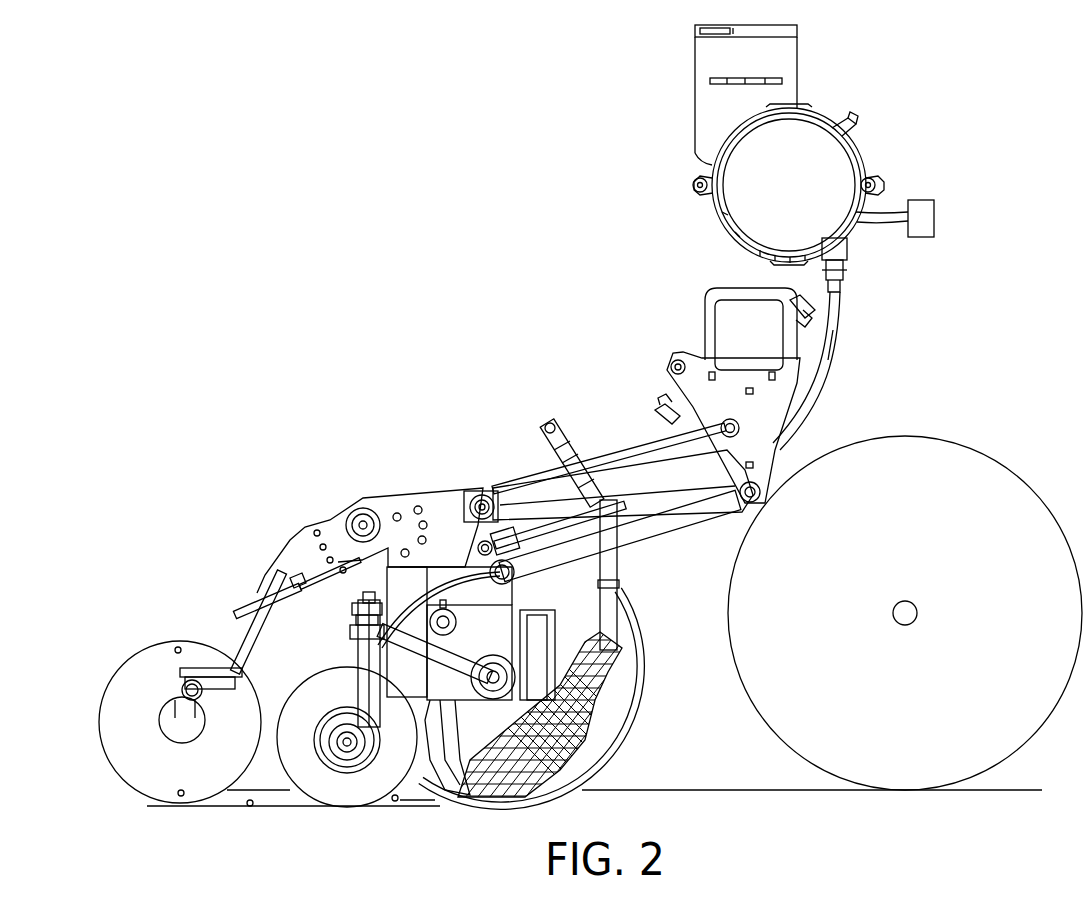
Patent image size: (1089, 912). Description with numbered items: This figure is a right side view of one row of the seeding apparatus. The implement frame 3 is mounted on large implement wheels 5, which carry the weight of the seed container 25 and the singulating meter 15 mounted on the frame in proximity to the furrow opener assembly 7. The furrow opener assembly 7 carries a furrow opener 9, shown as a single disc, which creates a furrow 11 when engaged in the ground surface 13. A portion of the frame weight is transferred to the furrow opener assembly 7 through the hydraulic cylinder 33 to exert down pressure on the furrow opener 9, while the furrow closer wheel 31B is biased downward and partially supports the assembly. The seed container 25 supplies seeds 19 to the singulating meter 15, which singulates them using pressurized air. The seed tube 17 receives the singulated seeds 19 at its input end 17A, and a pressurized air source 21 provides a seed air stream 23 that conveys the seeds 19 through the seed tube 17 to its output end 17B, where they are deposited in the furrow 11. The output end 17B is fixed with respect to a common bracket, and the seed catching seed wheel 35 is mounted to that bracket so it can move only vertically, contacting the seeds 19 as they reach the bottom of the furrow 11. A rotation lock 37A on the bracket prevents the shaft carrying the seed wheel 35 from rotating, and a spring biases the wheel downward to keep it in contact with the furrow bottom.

The implement frame 3 is at (712, 312).
The implement wheels 5 is at (972, 444).
The furrow opener assembly 7 is at (466, 490).
The furrow opener 9 is at (647, 692).
The furrow 11 is at (262, 795).
The ground surface 13 is at (670, 790).
The singulating meter 15 is at (858, 153).
The seed tube 17 is at (820, 392).
The input end 17A is at (842, 296).
The output end 17B is at (446, 782).
The seeds 19 is at (385, 802).
The pressurized air source 21 is at (936, 210).
The seed air stream 23 is at (838, 340).
The seed container 25 is at (800, 58).
The furrow closer wheel 31B is at (122, 668).
The hydraulic cylinder 33 is at (637, 455).
The seed wheel 35 is at (323, 673).
The rotation lock 37A is at (350, 612).